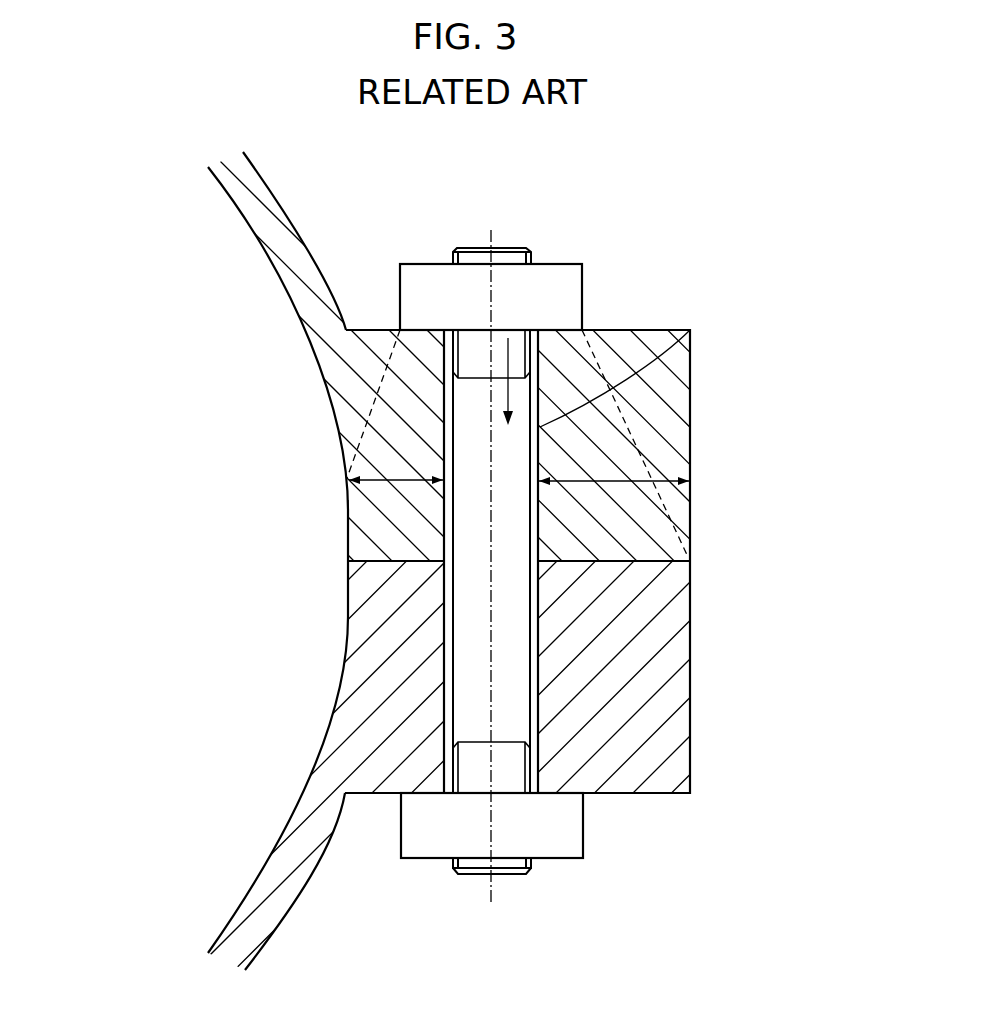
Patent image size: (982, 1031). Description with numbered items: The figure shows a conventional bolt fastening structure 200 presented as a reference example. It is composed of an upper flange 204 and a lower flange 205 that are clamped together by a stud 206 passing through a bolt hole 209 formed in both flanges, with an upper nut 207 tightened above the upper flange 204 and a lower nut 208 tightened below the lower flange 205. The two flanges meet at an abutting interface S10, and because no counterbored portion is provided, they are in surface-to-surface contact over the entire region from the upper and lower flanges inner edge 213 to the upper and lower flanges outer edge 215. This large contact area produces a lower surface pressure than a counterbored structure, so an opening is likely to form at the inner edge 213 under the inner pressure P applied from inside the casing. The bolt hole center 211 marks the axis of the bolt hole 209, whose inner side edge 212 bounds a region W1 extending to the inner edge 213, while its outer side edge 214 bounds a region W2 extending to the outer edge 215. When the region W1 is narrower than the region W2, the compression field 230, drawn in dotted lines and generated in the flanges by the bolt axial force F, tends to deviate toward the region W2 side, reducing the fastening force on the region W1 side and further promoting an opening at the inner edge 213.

The bolt fastening structure 200 is at (147, 166).
The upper flange 204 is at (670, 393).
The lower flange 205 is at (668, 733).
The stud 206 is at (690, 330).
The upper nut 207 is at (553, 295).
The lower nut 208 is at (552, 828).
The bolt hole 209 is at (437, 423).
The bolt hole center 211 is at (490, 230).
The inner side edge of the bolt hole 212 is at (420, 550).
The upper and lower flanges inner edge 213 is at (347, 561).
The outer side edge of the bolt hole 214 is at (543, 558).
The upper and lower flanges outer edge 215 is at (690, 562).
The compression field 230 is at (582, 374).
The abutting interface S10 is at (382, 561).
The region W1 is at (396, 461).
The region W2 is at (614, 467).
The bolt axial force F is at (496, 381).
The inner pressure P is at (167, 494).